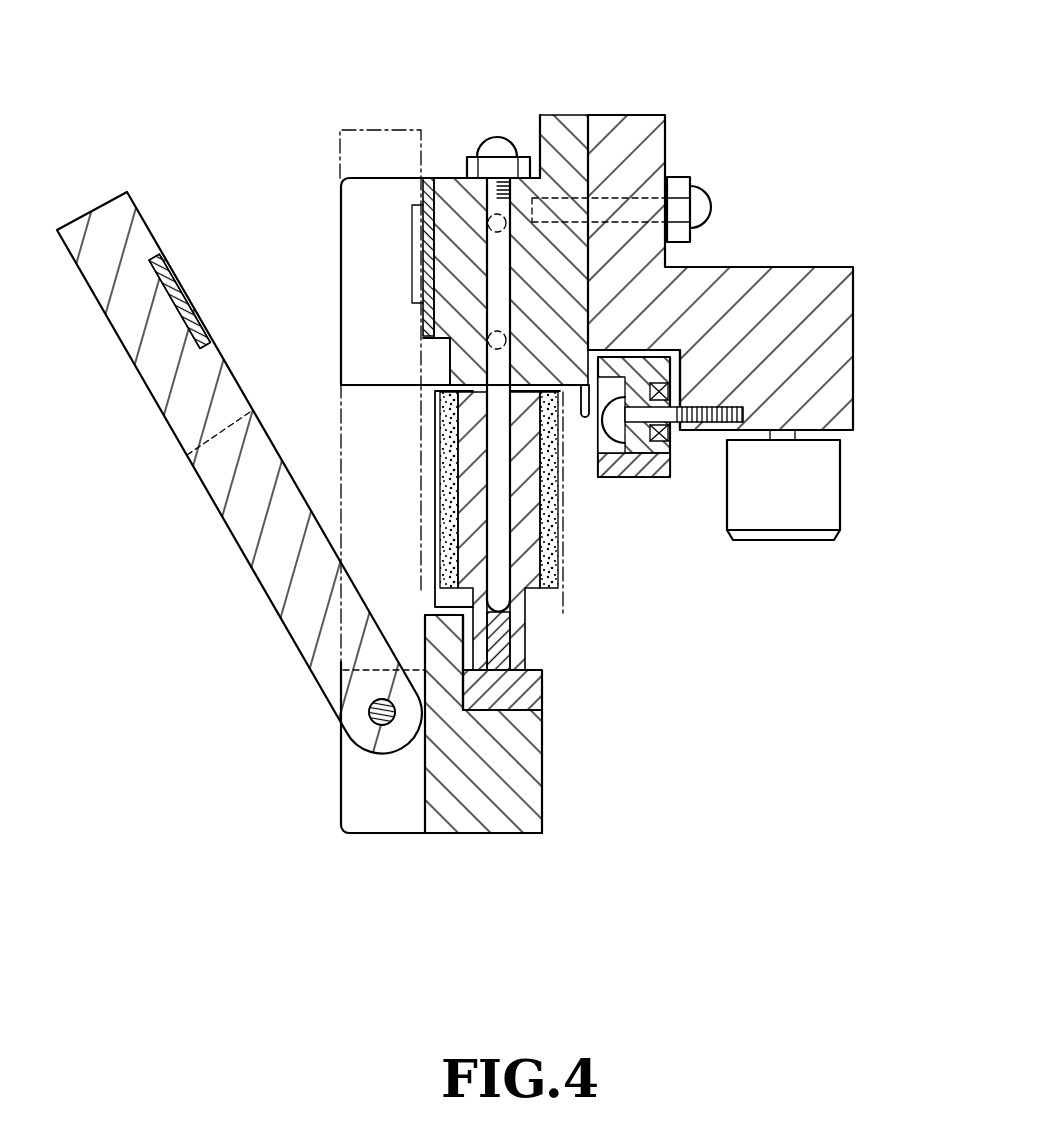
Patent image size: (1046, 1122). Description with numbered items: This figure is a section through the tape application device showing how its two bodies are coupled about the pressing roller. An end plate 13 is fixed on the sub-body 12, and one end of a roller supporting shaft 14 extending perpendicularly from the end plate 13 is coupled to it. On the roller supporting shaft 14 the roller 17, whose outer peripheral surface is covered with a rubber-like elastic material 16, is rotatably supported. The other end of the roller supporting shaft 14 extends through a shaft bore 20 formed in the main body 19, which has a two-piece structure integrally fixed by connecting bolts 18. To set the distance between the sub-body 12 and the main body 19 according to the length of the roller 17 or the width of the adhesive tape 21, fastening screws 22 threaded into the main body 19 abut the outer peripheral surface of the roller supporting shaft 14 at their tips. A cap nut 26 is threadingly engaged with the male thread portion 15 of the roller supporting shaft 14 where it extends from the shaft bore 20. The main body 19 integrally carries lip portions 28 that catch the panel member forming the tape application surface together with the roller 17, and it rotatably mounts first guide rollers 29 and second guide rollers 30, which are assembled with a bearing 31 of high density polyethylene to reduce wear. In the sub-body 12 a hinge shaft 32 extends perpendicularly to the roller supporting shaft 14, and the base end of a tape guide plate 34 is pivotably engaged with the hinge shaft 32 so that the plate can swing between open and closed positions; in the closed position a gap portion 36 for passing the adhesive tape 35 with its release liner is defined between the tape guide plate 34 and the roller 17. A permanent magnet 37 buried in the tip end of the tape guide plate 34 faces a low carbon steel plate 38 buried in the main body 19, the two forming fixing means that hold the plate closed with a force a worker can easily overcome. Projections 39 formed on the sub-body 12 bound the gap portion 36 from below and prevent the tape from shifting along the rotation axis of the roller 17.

The sub-body 12 is at (485, 820).
The end plate 13 is at (530, 685).
The roller supporting shaft 14 is at (505, 638).
The male thread portion 15 is at (473, 192).
The rubber-like elastic material 16 is at (450, 487).
The roller 17 is at (563, 585).
The connecting bolts 18 is at (711, 199).
The main body 19 is at (661, 106).
The shaft bore 20 is at (493, 273).
The adhesive tape 21 is at (567, 550).
The fastening screw 22 is at (488, 222).
The cap nut 26 is at (498, 137).
The lip portions 28 is at (584, 420).
The first guide rollers 29 is at (828, 470).
The second guide rollers 30 is at (648, 470).
The bearing 31 is at (672, 437).
The hinge shaft 32 is at (368, 717).
The tape guide plate 34 is at (240, 498).
The adhesive tape with release liner 35 is at (433, 408).
The gap portion 36 is at (433, 443).
The permanent magnet 37 is at (173, 262).
The low carbon steel plate 38 is at (422, 188).
The projections 39 is at (424, 628).